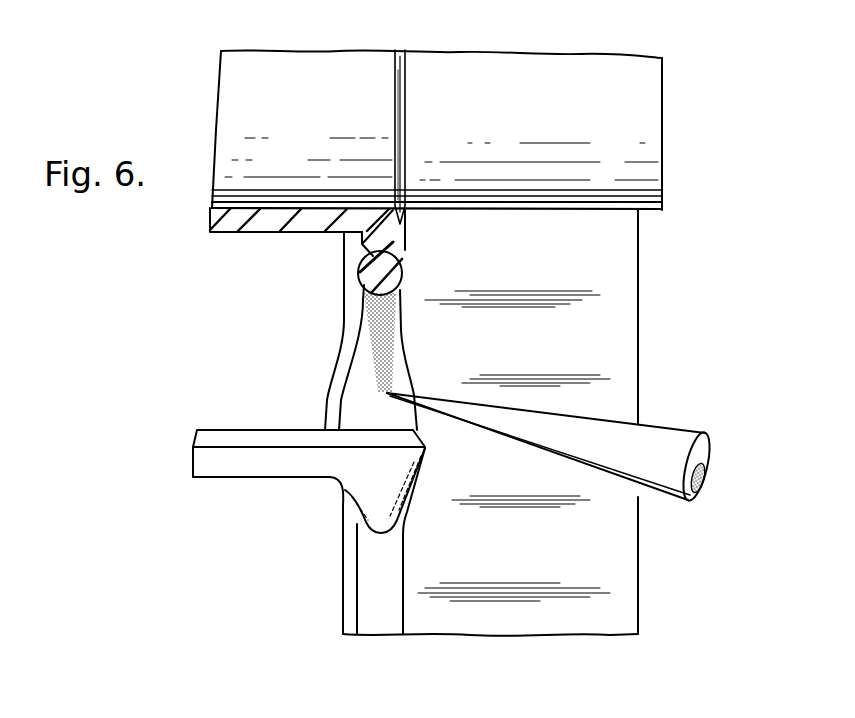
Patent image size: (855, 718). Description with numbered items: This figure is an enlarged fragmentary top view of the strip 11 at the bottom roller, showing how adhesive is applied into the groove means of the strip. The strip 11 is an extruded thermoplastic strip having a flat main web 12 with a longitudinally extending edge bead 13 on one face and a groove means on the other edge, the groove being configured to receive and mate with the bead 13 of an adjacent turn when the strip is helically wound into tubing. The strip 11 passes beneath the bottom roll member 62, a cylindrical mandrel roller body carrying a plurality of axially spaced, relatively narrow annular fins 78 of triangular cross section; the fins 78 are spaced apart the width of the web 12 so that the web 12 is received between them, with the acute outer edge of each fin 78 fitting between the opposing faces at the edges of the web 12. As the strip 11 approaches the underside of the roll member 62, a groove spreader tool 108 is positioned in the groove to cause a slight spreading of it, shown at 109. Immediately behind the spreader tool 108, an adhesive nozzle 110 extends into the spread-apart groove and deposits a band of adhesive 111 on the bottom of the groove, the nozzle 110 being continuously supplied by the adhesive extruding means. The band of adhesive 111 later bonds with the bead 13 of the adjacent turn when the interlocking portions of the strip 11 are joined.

The extruded strip 11 is at (640, 368).
The flat main web 12 is at (627, 569).
The longitudinally extending edge bead portion 13 is at (372, 277).
The bottom roll member 62 is at (662, 190).
The annular fins 78 is at (405, 68).
The groove spreader tool 108 is at (256, 467).
The spreading of the groove 109 is at (340, 398).
The adhesive nozzle 110 is at (692, 440).
The band of adhesive 111 is at (368, 335).